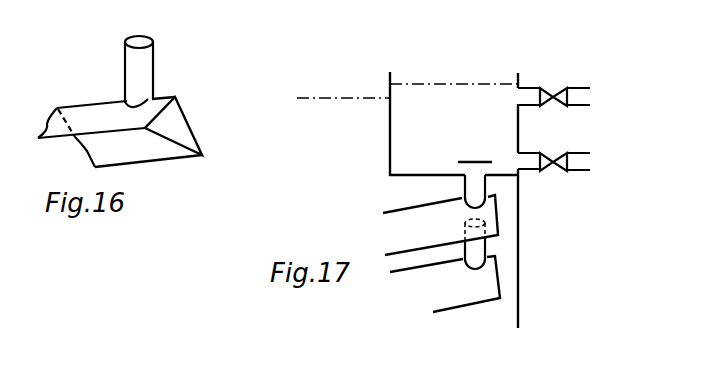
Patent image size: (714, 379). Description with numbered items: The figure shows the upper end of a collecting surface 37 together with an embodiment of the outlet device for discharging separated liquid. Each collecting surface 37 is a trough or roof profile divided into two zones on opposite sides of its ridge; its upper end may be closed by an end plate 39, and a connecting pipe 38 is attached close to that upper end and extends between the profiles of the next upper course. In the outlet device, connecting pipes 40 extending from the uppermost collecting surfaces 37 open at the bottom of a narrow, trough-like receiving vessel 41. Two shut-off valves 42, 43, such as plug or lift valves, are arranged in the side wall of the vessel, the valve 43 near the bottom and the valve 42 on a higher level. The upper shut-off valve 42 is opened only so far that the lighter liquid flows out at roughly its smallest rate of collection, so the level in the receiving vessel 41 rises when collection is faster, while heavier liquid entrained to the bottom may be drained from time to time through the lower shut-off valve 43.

In FIG. 16, the collecting surface 37 is at (92, 113).
In FIG. 17, the collecting surface 37 is at (417, 231).
In FIG. 16, the connecting pipe 38 is at (143, 55).
In FIG. 17, the connecting pipe 38 is at (487, 245).
In FIG. 16, the end plate 39 is at (182, 133).
In FIG. 17, the connecting pipe 40 is at (472, 183).
In FIG. 17, the receiving vessel 41 is at (427, 100).
In FIG. 17, the upper shut-off valve 42 is at (566, 93).
In FIG. 17, the lower shut-off valve 43 is at (568, 160).